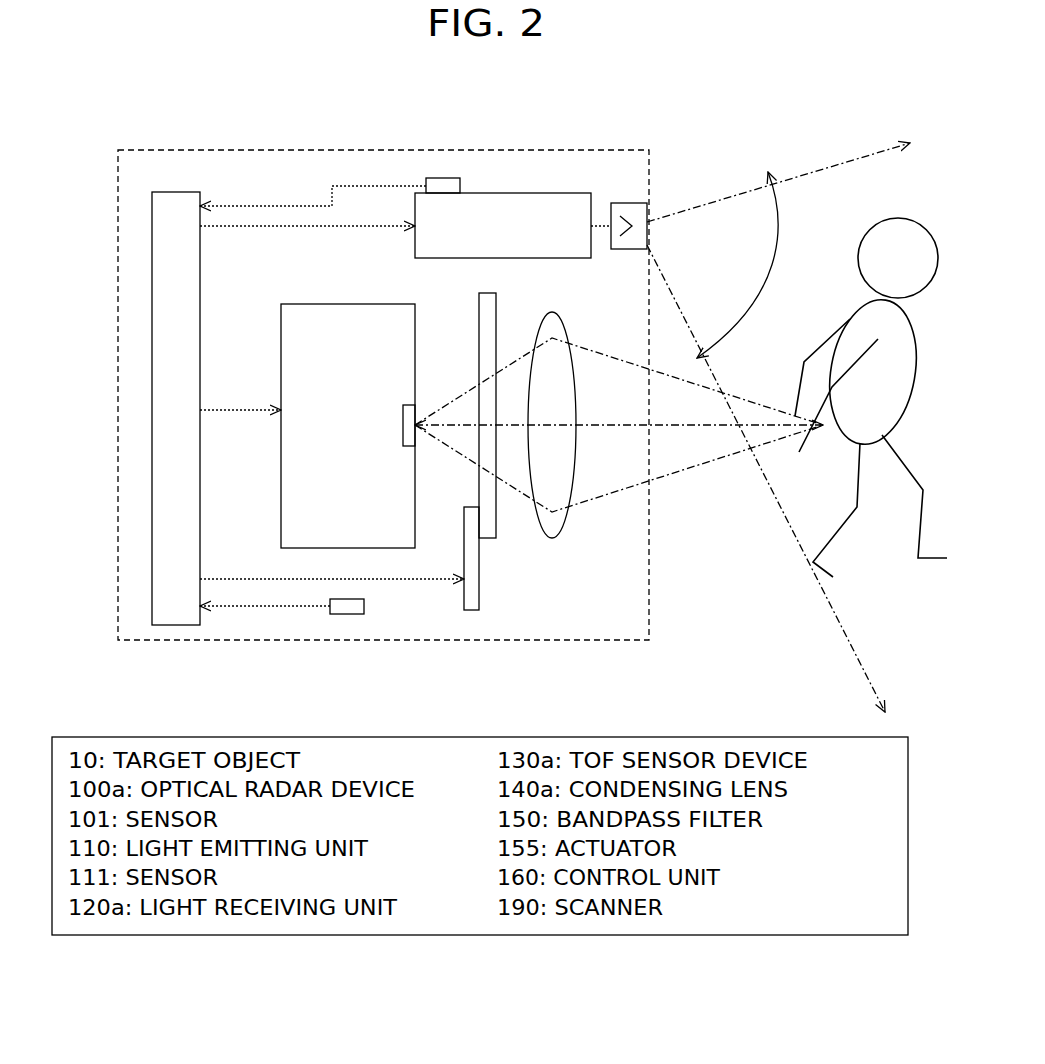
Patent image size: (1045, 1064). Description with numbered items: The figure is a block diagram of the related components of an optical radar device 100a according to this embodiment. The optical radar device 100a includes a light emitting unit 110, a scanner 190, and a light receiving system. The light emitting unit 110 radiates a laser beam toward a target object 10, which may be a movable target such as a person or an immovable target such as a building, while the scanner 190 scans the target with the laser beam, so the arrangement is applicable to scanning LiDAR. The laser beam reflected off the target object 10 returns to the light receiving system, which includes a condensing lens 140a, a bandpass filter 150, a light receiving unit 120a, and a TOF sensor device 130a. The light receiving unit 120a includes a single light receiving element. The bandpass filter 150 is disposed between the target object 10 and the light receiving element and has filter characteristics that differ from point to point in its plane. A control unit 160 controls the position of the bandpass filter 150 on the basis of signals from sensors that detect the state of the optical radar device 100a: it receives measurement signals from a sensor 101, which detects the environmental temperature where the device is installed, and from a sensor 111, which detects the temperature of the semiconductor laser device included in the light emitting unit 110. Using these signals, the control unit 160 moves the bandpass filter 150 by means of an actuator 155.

The target object 10 is at (892, 218).
The optical radar device 100a is at (622, 150).
The sensor 101 is at (352, 614).
The light emitting unit 110 is at (548, 193).
The sensor 111 is at (440, 178).
The light receiving unit 120a is at (403, 413).
The TOF sensor device 130a is at (281, 318).
The condensing lens 140a is at (552, 536).
The bandpass filter 150 is at (488, 538).
The actuator 155 is at (477, 610).
The control unit 160 is at (152, 421).
The scanner 190 is at (627, 203).